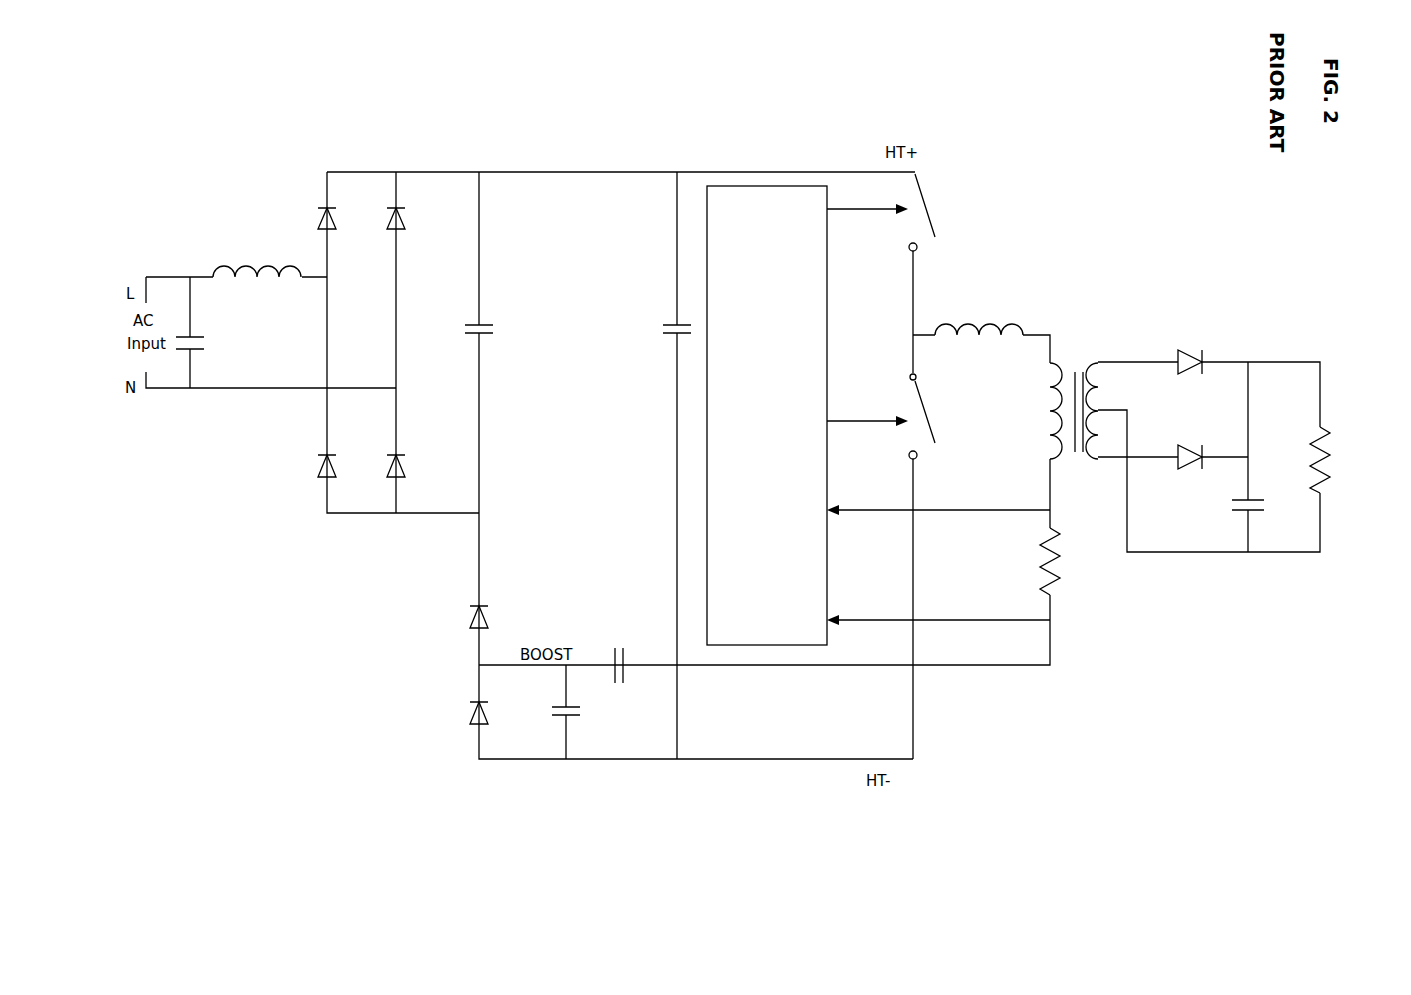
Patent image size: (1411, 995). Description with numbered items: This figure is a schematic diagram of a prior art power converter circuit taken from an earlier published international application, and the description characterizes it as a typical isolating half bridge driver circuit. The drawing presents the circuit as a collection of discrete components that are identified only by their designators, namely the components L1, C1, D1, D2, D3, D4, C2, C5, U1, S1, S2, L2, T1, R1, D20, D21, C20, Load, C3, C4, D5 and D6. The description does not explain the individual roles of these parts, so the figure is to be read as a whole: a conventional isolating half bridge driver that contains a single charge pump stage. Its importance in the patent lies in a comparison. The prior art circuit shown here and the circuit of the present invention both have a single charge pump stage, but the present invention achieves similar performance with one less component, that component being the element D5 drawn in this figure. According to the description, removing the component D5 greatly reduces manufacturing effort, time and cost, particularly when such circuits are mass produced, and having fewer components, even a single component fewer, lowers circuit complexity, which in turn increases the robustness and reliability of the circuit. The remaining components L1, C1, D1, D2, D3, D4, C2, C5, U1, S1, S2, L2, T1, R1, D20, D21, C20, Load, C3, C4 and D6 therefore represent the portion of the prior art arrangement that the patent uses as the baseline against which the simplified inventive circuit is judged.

The input filter inductor L1 is at (257, 256).
The input filter capacitor C1 is at (202, 332).
The bridge rectifier diode D1 is at (340, 218).
The bridge rectifier diode D2 is at (409, 218).
The bridge rectifier diode D3 is at (340, 466).
The bridge rectifier diode D4 is at (409, 466).
The bus capacitor C2 is at (492, 330).
The bus capacitor C5 is at (660, 330).
The controller U1 is at (767, 415).
The switch S1 is at (937, 254).
The switch S2 is at (937, 547).
The resonant inductor L2 is at (979, 313).
The transformer T1 is at (1074, 399).
The current sense resistor R1 is at (1063, 561).
The output rectifier diode D20 is at (1189, 373).
The output rectifier diode D21 is at (1189, 469).
The output capacitor C20 is at (1266, 457).
The load Load is at (1341, 460).
The boost capacitor C3 is at (579, 712).
The boost coupling capacitor C4 is at (617, 677).
The component D5 is at (492, 713).
The boost diode D6 is at (492, 617).